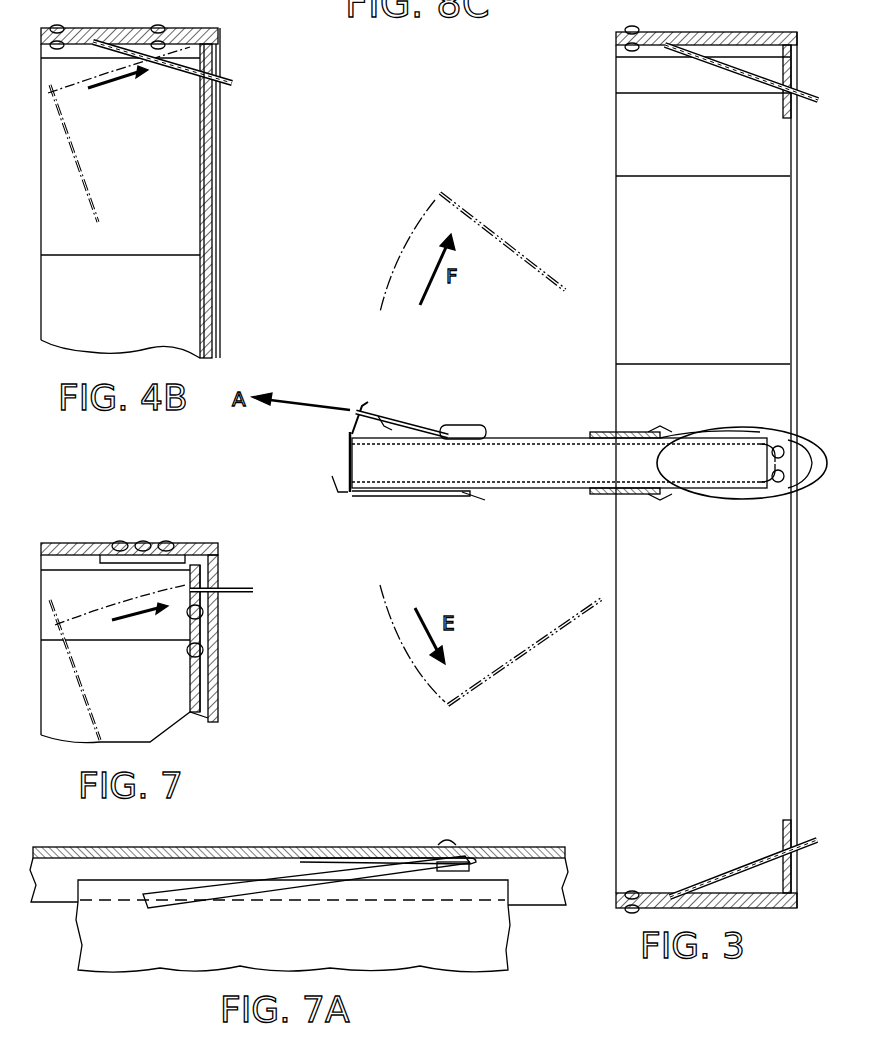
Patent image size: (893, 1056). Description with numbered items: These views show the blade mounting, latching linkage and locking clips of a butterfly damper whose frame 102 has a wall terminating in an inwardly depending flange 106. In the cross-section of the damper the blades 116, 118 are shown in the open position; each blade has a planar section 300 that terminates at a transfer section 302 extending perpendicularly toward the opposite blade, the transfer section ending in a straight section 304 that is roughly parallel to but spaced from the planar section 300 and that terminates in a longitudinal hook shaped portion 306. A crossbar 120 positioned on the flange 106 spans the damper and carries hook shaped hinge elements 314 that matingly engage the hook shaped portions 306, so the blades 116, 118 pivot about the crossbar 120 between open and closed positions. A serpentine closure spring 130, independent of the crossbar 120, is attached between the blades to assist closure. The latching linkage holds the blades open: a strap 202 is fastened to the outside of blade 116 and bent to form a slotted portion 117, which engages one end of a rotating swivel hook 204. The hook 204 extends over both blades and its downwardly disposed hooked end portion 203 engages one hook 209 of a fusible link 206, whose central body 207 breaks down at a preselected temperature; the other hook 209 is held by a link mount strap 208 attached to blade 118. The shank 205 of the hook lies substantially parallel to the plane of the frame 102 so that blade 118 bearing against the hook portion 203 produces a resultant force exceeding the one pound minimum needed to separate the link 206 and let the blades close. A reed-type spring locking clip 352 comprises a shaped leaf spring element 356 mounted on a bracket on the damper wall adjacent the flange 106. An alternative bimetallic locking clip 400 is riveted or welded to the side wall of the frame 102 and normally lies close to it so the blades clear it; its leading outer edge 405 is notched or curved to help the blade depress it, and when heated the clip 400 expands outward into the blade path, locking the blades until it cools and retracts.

In FIG. 4B, the frame 102 is at (220, 255).
In FIG. 7, the frame 102 is at (88, 543).
In FIG. 7A, the frame 102 is at (70, 865).
In FIG. 3, the frame 102 is at (768, 678).
In FIG. 3, the inwardly depending flange 106 is at (797, 885).
In FIG. 4B, the blade 116 is at (198, 170).
In FIG. 7, the blade 116 is at (188, 695).
In FIG. 7A, the blade 116 is at (293, 926).
In FIG. 3, the blade 116 is at (498, 490).
In FIG. 3, the slotted portion 117 is at (340, 497).
In FIG. 3, the blade 118 is at (528, 438).
In FIG. 3, the crossbar 120 is at (795, 470).
In FIG. 3, the serpentine closure spring 130 is at (698, 428).
In FIG. 3, the strap 202 is at (385, 497).
In FIG. 3, the hooked end portion 203 is at (350, 425).
In FIG. 3, the rotating swivel hook 204 is at (358, 460).
In FIG. 3, the shank 205 is at (340, 462).
In FIG. 3, the fusible link 206 is at (389, 410).
In FIG. 3, the central body 207 is at (445, 425).
In FIG. 3, the link mount strap 208 is at (460, 427).
In FIG. 3, the hook 209 is at (385, 412).
In FIG. 3, the planar section 300 is at (575, 432).
In FIG. 3, the transfer section 302 is at (762, 490).
In FIG. 3, the straight section 304 is at (770, 445).
In FIG. 3, the hook shaped portion 306 is at (790, 490).
In FIG. 3, the hook shaped hinge element 314 is at (795, 433).
In FIG. 3, the spring locking clip 352 is at (695, 64).
In FIG. 4B, the shaped leaf spring element 356 is at (160, 63).
In FIG. 7, the locking clip 400 is at (125, 565).
In FIG. 7A, the locking clip 400 is at (396, 860).
In FIG. 7A, the leading outer edge 405 is at (165, 898).